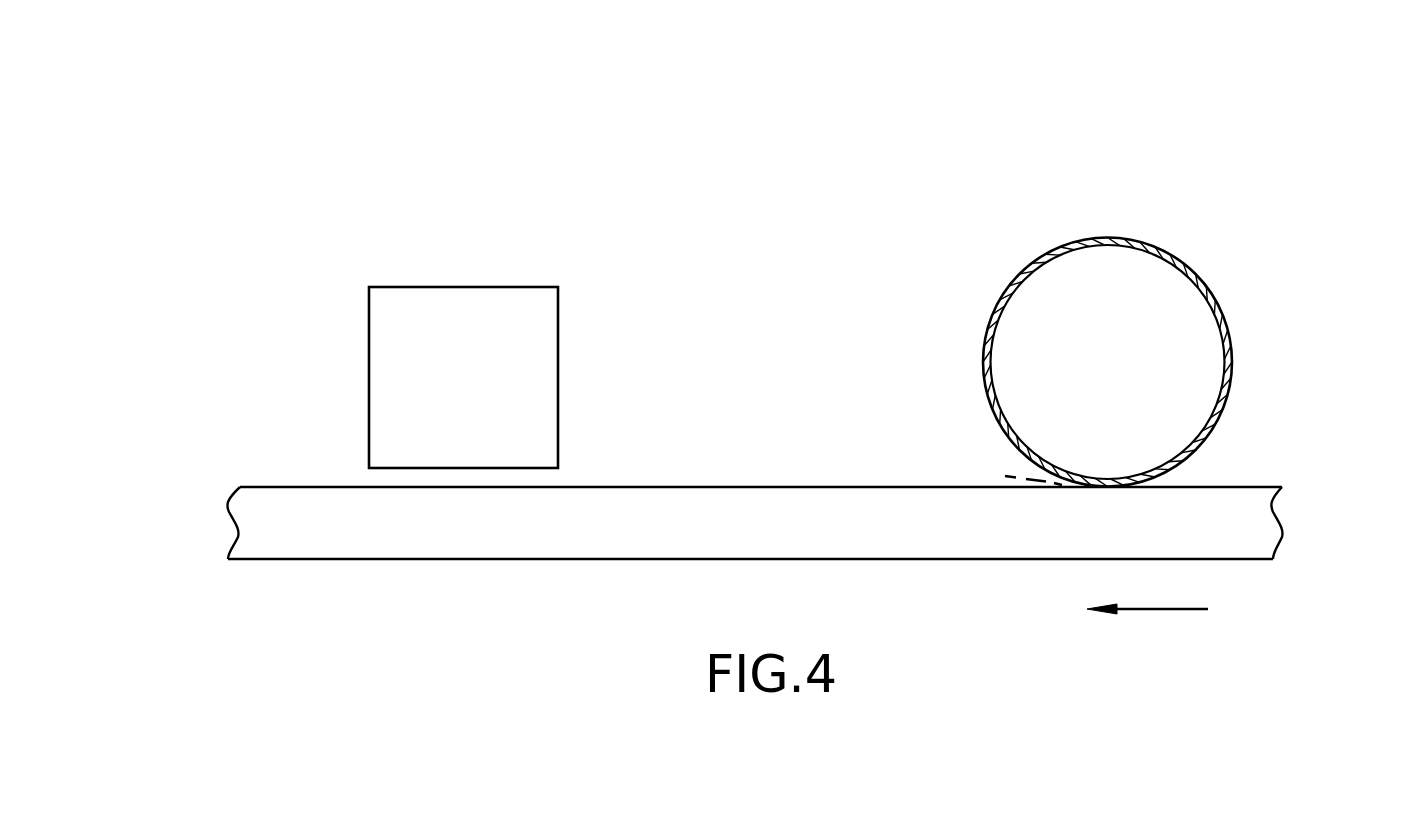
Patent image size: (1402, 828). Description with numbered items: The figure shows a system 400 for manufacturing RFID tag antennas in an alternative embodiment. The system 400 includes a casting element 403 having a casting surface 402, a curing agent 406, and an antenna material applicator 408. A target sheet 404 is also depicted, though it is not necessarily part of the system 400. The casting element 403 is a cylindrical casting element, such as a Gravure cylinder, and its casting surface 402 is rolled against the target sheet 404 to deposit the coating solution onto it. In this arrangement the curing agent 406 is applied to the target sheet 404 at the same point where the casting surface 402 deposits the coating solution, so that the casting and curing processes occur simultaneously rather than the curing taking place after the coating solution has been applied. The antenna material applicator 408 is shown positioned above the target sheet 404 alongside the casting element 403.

The system 400 is at (181, 247).
The casting surface 402 is at (1210, 290).
The casting element 403 is at (1128, 217).
The target sheet 404 is at (1223, 532).
The curing agent 406 is at (995, 473).
The antenna material applicator 408 is at (465, 287).